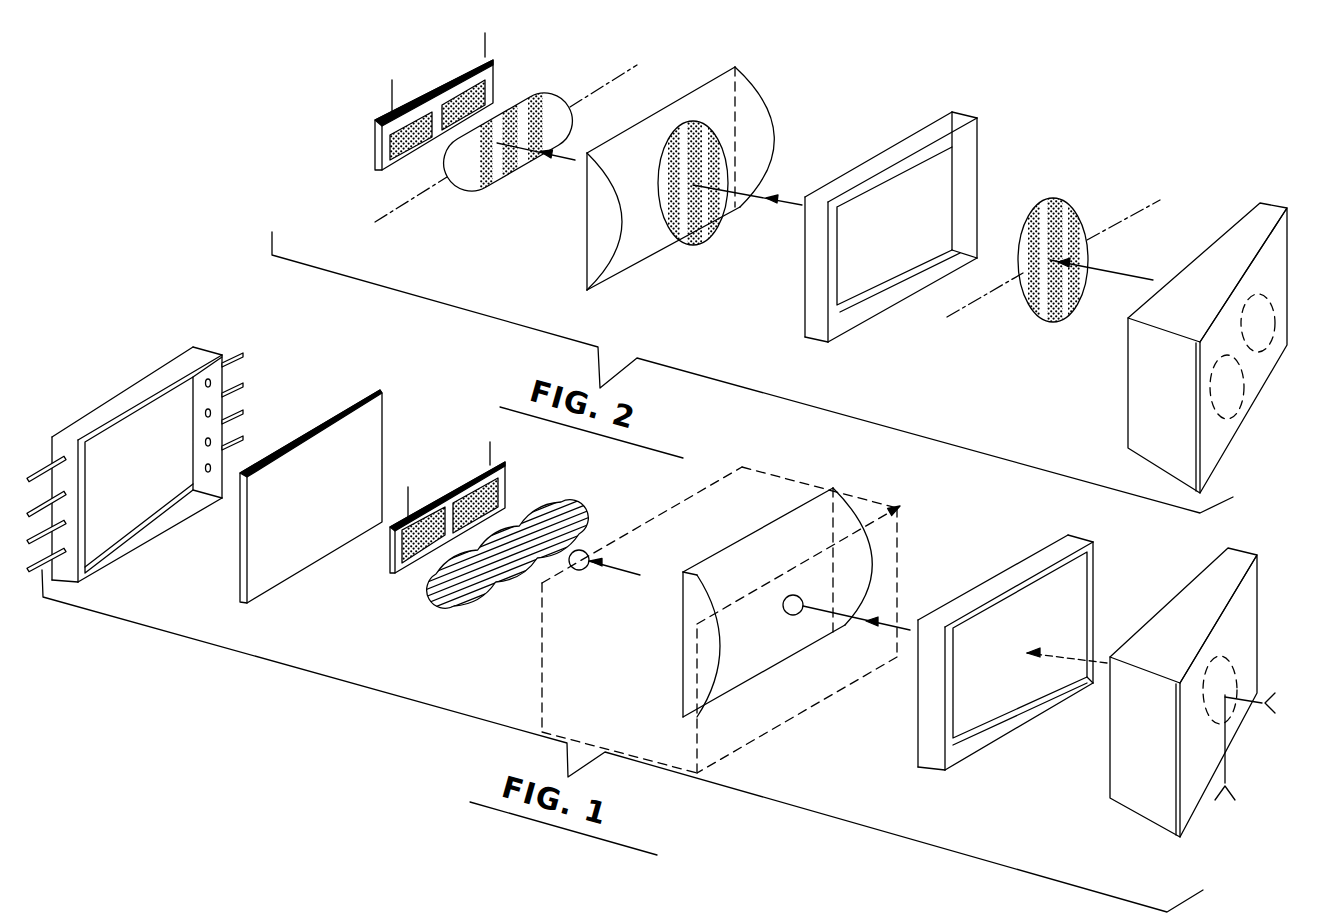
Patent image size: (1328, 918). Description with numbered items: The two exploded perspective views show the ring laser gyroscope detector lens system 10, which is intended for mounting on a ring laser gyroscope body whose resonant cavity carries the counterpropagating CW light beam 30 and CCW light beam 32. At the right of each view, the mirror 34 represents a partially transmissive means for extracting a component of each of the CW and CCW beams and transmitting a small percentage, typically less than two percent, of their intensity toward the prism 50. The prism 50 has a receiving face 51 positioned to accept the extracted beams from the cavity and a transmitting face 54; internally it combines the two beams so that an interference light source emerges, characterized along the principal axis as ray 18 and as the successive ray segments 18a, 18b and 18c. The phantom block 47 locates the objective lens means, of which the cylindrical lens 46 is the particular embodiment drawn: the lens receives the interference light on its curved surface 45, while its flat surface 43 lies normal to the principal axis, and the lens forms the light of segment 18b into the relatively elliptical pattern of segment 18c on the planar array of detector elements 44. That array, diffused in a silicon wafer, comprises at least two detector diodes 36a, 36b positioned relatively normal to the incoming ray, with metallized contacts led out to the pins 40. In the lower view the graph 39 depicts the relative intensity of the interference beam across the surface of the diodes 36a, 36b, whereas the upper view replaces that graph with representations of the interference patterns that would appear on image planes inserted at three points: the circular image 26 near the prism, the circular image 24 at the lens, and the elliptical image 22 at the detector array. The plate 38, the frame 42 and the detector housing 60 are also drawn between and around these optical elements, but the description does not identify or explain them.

In FIG. 1, the ring laser gyroscope detector lens system 10 is at (540, 475).
In FIG. 1, the interference light source ray 18 is at (633, 572).
In FIG. 2, the interference light source ray segment 18a is at (1113, 270).
In FIG. 2, the interference light source ray segment 18b is at (793, 200).
In FIG. 2, the elliptical pattern ray segment 18c is at (462, 137).
In FIG. 2, the elliptical image 22 is at (557, 157).
In FIG. 2, the circular image 24 is at (723, 230).
In FIG. 2, the circular image 26 is at (1067, 200).
In FIG. 1, the CW light beam 30 is at (1228, 745).
In FIG. 1, the CCW light beam 32 is at (1240, 693).
In FIG. 1, the mirror 34 is at (1248, 592).
In FIG. 2, the detector diode 36a is at (383, 128).
In FIG. 1, the detector diode 36a is at (387, 546).
In FIG. 2, the detector diode 36b is at (477, 93).
In FIG. 1, the detector diode 36b is at (497, 483).
In FIG. 1, the transparent window plate 38 is at (335, 480).
In FIG. 1, the relative intensity graph 39 is at (497, 583).
In FIG. 1, the pins 40 is at (243, 352).
In FIG. 2, the aperture frame 42 is at (980, 165).
In FIG. 1, the aperture frame 42 is at (1097, 582).
In FIG. 1, the flat surface 43 is at (760, 527).
In FIG. 2, the planar array of detector elements 44 is at (493, 73).
In FIG. 1, the planar array of detector elements 44 is at (400, 576).
In FIG. 1, the curved surface 45 is at (852, 574).
In FIG. 2, the cylindrical lens 46 is at (748, 138).
In FIG. 1, the cylindrical lens 46 is at (873, 552).
In FIG. 1, the objective lens means 47 is at (540, 643).
In FIG. 2, the prism 50 is at (1195, 318).
In FIG. 1, the prism 50 is at (1193, 634).
In FIG. 2, the receiving face 51 is at (1220, 432).
In FIG. 2, the transmitting face 54 is at (1143, 292).
In FIG. 1, the detector housing 60 is at (177, 527).